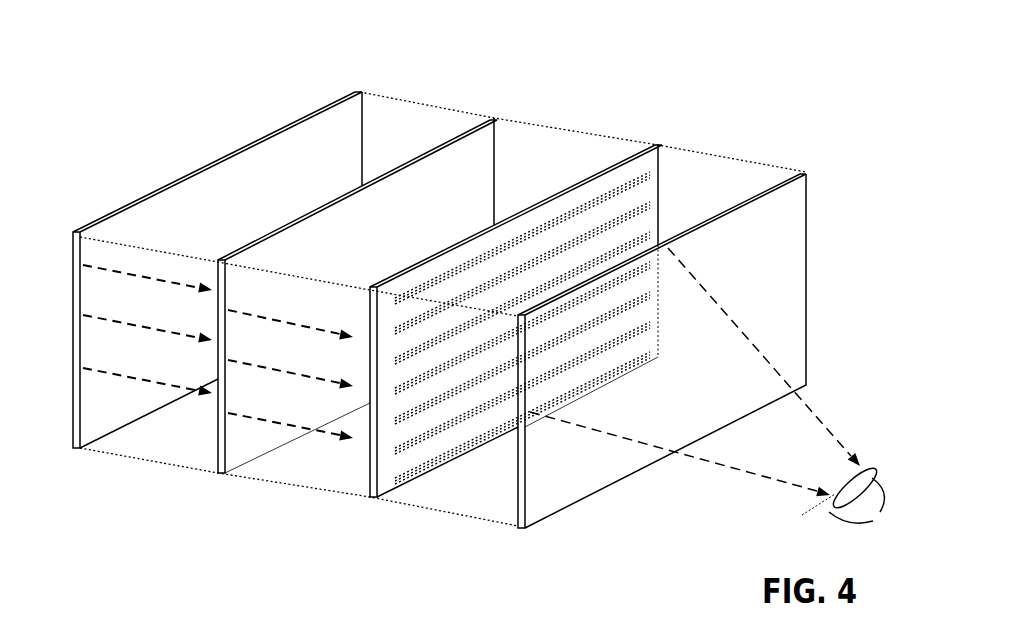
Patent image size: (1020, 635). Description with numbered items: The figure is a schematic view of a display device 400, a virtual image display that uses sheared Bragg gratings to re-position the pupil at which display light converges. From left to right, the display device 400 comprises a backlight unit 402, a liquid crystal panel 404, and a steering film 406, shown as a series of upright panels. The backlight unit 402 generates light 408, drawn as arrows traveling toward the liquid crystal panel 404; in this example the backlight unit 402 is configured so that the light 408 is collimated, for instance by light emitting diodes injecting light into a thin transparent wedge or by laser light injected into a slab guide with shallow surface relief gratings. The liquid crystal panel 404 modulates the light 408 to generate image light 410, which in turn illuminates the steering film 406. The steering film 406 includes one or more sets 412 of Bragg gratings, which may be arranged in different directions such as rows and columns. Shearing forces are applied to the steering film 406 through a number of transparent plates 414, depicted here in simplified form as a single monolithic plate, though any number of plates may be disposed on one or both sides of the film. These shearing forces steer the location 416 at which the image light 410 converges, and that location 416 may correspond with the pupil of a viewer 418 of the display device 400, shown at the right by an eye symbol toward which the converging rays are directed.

The display device 400 is at (570, 71).
The backlight unit 402 is at (73, 385).
The liquid crystal (LC) panel 404 is at (222, 477).
The steering film 406 is at (367, 486).
The light 408 is at (122, 375).
The image light 410 is at (277, 427).
The sets of Bragg gratings 412 is at (423, 437).
The transparent plates 414 is at (806, 233).
The location 416 is at (876, 441).
The viewer 418 is at (874, 481).